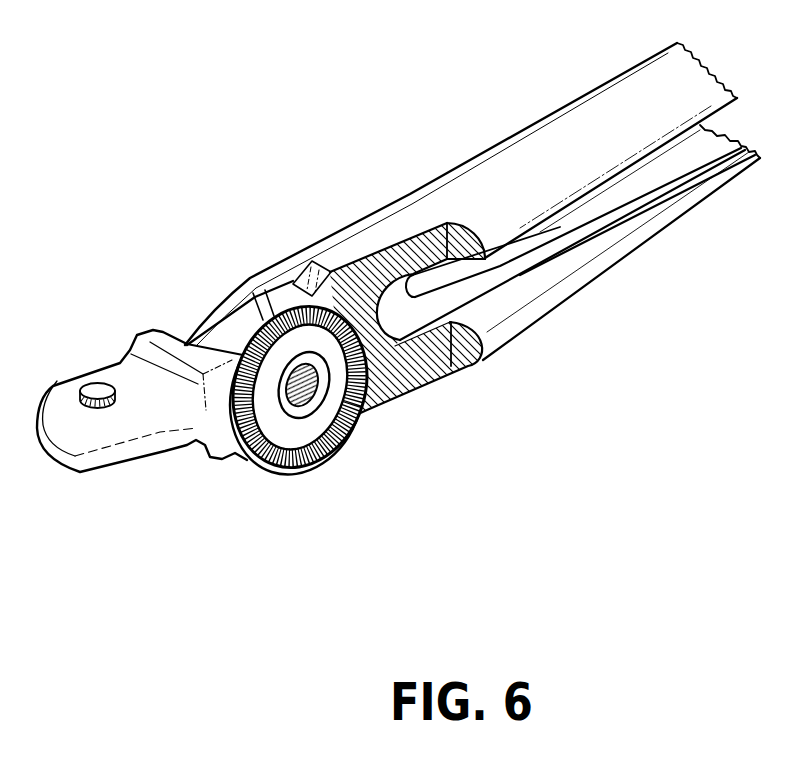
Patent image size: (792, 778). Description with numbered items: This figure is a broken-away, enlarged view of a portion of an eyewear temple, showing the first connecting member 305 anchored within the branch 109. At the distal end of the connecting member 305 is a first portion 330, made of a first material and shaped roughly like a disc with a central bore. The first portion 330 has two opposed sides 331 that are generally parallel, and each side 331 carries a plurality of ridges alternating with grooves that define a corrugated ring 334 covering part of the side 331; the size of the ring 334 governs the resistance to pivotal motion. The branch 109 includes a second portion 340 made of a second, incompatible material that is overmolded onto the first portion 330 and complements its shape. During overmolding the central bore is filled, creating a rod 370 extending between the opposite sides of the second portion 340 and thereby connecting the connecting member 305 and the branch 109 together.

The branch 109 is at (623, 100).
The first connecting member 305 is at (117, 380).
The first portion 330 is at (280, 365).
The opposed sides 331 is at (294, 433).
The corrugated ring 334 is at (318, 455).
The second portion 340 is at (305, 382).
The rod 370 is at (313, 382).